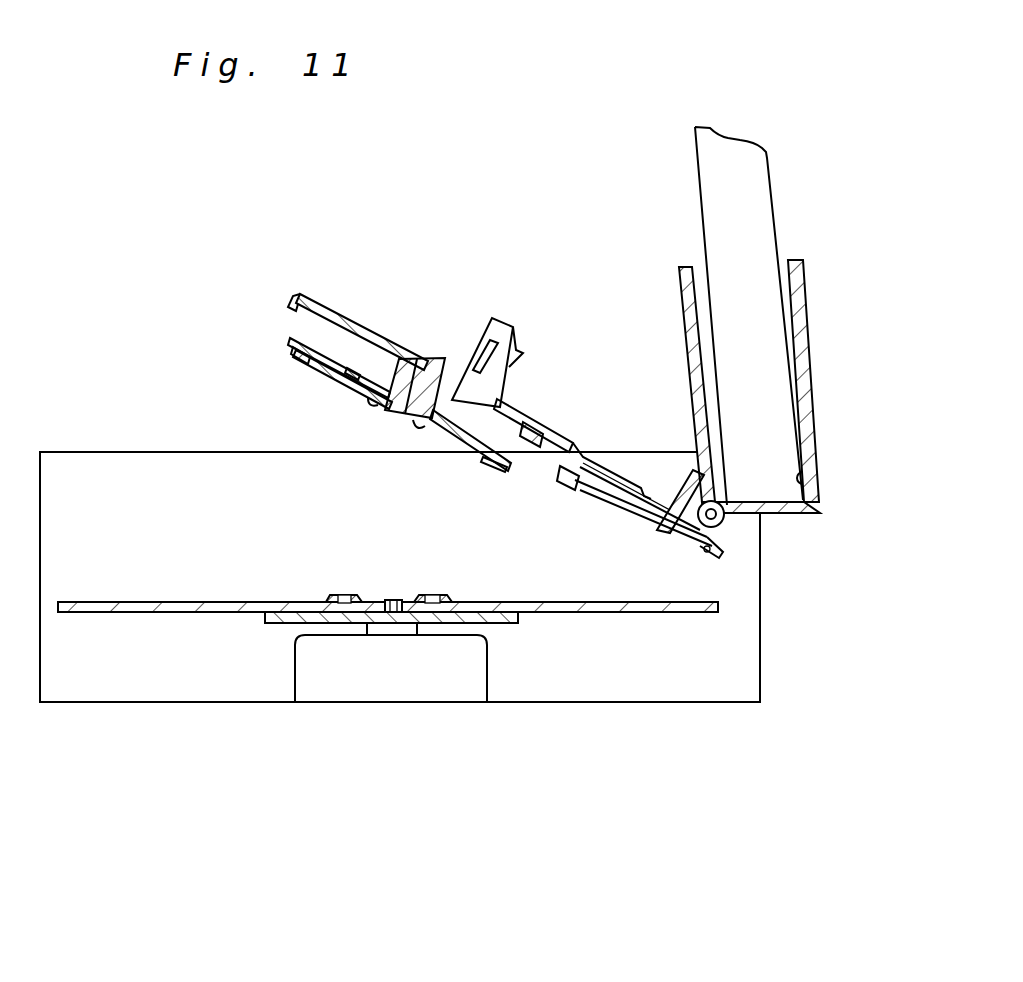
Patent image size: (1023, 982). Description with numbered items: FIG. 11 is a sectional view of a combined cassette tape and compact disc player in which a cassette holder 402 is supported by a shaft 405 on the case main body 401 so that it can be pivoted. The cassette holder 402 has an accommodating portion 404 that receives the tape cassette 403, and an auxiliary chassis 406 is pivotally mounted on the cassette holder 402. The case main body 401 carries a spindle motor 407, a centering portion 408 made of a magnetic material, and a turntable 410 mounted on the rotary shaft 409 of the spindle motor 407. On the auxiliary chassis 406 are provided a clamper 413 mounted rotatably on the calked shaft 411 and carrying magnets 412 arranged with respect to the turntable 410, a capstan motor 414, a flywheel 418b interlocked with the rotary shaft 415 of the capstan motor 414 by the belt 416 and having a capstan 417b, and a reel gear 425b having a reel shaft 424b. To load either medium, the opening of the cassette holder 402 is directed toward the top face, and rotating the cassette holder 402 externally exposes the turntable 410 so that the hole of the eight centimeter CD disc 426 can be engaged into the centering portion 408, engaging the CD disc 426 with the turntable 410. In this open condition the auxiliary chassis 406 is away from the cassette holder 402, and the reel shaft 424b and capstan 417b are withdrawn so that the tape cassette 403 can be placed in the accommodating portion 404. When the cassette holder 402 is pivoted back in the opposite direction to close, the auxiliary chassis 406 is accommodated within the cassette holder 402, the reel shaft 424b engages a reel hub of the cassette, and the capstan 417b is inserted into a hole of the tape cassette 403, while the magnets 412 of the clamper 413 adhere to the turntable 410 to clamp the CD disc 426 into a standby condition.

The case main body 401 is at (97, 677).
The cassette holder 402 is at (807, 283).
The tape cassette 403 is at (760, 405).
The accommodating portion 404 is at (810, 483).
The shaft 405 is at (727, 522).
The auxiliary chassis 406 is at (305, 292).
The spindle motor 407 is at (352, 683).
The centering portion 408 is at (357, 596).
The rotary shaft 409 is at (393, 615).
The turntable 410 is at (507, 623).
The calked shaft 411 is at (432, 357).
The magnet 412 is at (292, 346).
The clamper 413 is at (343, 376).
The capstan motor 414 is at (548, 447).
The rotary shaft 415 is at (565, 492).
The belt 416 is at (598, 498).
The capstan 417b is at (663, 482).
The flywheel 418b is at (690, 542).
The reel shaft 424b is at (513, 320).
The reel gear 425b is at (533, 412).
The CD disc 426 is at (659, 613).